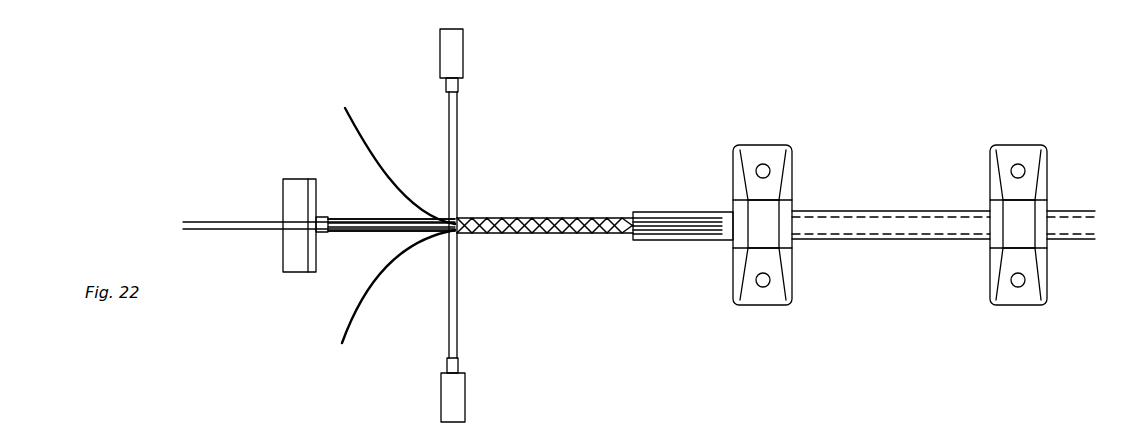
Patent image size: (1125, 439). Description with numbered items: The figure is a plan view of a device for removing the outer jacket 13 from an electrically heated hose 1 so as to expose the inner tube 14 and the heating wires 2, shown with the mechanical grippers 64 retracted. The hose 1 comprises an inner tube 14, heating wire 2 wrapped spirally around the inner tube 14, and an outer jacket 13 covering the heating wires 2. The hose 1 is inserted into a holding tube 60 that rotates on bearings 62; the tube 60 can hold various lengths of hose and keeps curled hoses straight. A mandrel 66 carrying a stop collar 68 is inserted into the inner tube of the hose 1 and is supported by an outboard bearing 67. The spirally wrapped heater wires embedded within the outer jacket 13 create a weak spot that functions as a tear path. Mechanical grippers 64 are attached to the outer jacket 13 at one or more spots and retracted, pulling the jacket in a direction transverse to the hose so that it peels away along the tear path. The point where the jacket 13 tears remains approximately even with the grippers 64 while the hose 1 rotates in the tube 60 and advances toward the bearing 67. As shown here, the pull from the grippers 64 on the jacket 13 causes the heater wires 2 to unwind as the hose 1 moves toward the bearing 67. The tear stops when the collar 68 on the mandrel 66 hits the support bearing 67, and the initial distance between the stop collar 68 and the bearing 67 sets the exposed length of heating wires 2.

The hose 1 is at (545, 236).
The heating wire 2 is at (345, 108).
The outer jacket 13 is at (458, 262).
The inner tube 14 is at (378, 231).
The holding tube 60 is at (870, 240).
The bearings 62 is at (762, 305).
The mechanical grippers 64 is at (440, 50).
The mandrel 66 is at (210, 222).
The outboard bearing 67 is at (306, 179).
The stop collar 68 is at (322, 232).